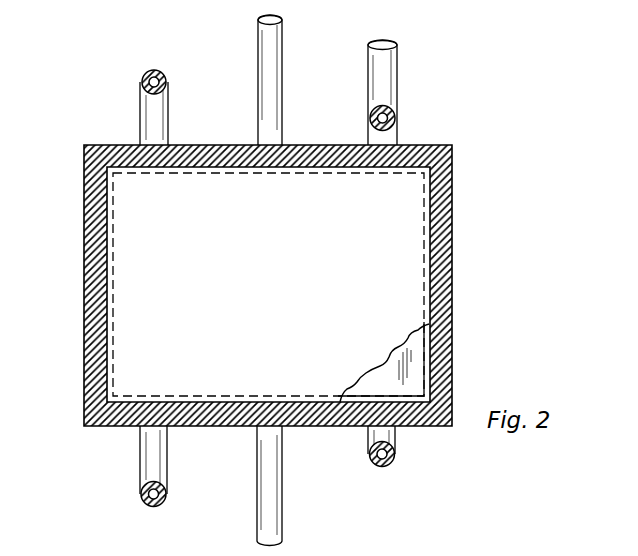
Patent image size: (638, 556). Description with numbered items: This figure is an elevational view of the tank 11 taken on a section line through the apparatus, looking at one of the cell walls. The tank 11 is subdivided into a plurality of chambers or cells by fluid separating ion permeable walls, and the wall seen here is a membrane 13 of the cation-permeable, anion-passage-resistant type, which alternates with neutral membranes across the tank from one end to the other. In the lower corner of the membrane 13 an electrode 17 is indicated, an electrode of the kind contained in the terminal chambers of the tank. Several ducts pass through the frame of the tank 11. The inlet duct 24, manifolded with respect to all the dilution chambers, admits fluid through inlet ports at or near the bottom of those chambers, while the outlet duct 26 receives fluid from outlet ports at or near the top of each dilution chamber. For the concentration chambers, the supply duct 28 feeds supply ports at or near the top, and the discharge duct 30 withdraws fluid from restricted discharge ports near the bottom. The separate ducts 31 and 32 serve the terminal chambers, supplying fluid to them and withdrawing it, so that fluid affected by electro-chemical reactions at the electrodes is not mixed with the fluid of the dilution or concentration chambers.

The tank 11 is at (83, 408).
The membrane 13 is at (408, 240).
The electrode 17 is at (413, 352).
The inlet duct 24 is at (393, 461).
The outlet duct 26 is at (388, 75).
The supply duct 28 is at (168, 79).
The discharge duct 30 is at (140, 501).
The duct 31 is at (273, 60).
The duct 32 is at (272, 503).